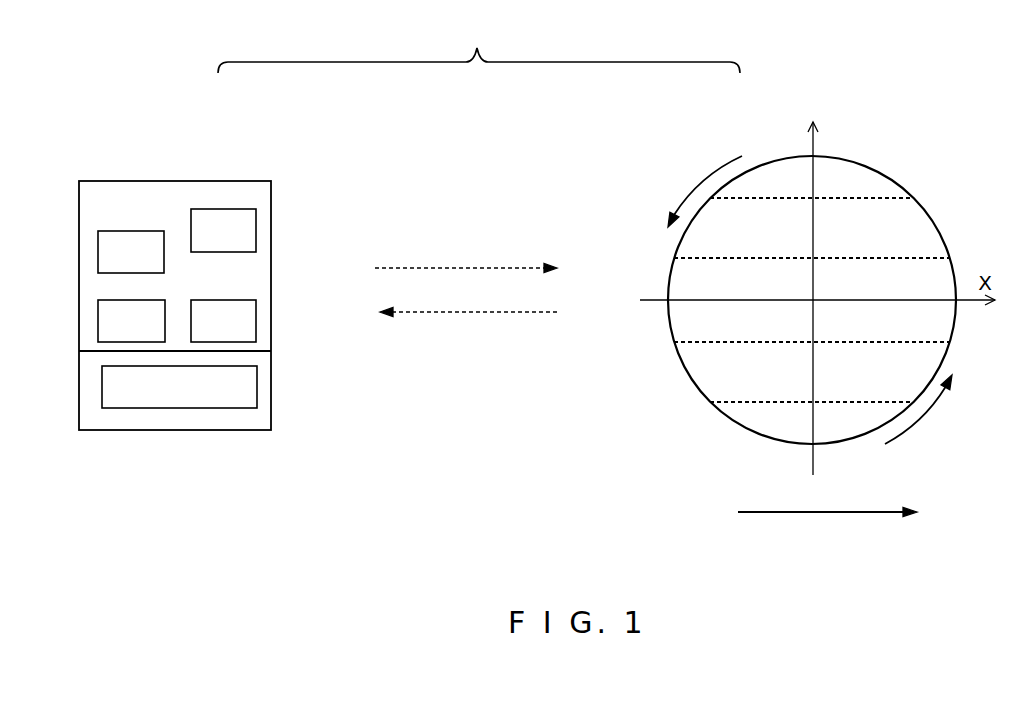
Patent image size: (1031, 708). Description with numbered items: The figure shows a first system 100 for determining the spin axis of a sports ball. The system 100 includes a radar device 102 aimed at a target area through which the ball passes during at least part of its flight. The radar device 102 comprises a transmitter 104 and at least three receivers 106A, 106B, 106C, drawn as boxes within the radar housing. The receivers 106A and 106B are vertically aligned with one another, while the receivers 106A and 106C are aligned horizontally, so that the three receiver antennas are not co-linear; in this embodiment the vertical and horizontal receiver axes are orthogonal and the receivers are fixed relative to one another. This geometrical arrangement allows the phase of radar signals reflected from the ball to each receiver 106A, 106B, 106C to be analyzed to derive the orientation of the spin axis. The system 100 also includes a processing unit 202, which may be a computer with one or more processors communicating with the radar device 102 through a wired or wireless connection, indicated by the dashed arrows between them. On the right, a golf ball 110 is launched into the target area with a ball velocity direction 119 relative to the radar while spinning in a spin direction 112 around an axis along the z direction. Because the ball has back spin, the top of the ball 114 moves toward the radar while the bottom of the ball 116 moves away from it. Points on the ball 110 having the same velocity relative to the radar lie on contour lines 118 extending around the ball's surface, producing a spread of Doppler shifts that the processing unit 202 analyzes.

The first system 100 is at (479, 46).
The radar device 102 is at (162, 181).
The transmitter 104 is at (223, 230).
The receiver 106A is at (131, 321).
The receiver 106B is at (131, 252).
The receiver 106C is at (223, 321).
The processing unit 202 is at (179, 387).
The golf ball 110 is at (677, 242).
The spin direction 112 is at (712, 177).
The top of the ball 114 is at (813, 155).
The bottom of the ball 116 is at (813, 447).
The contour lines 118 is at (917, 258).
The ball velocity direction 119 is at (840, 512).